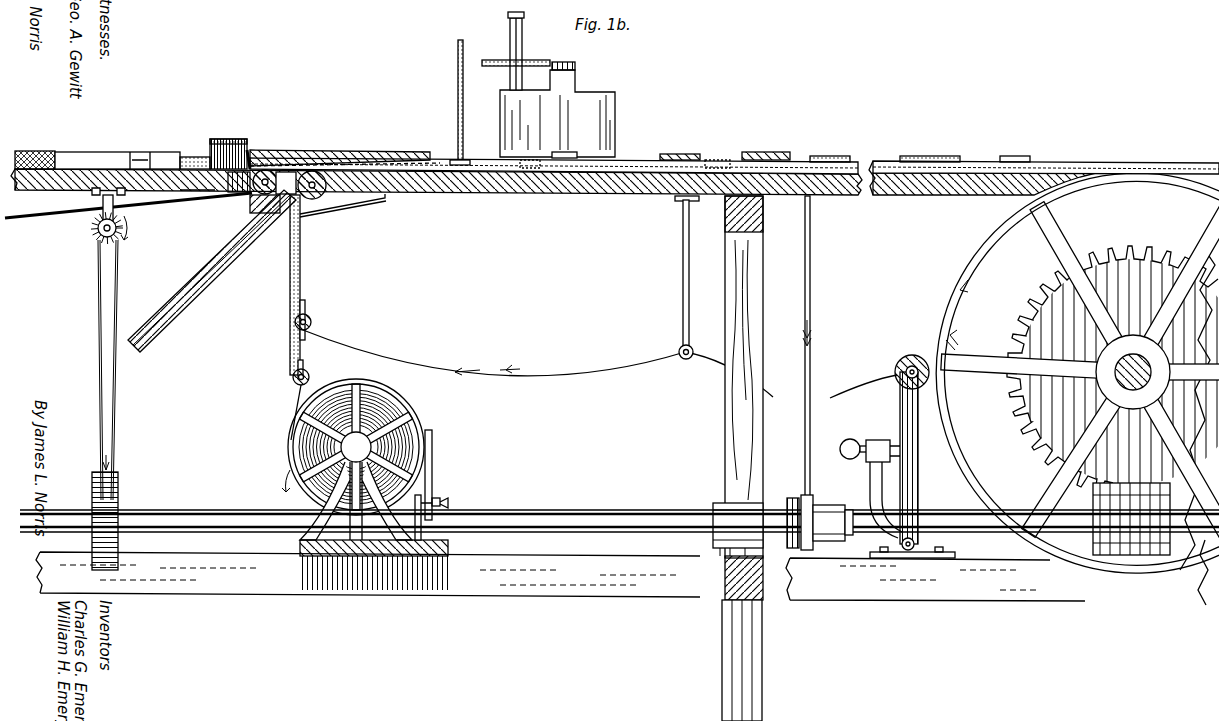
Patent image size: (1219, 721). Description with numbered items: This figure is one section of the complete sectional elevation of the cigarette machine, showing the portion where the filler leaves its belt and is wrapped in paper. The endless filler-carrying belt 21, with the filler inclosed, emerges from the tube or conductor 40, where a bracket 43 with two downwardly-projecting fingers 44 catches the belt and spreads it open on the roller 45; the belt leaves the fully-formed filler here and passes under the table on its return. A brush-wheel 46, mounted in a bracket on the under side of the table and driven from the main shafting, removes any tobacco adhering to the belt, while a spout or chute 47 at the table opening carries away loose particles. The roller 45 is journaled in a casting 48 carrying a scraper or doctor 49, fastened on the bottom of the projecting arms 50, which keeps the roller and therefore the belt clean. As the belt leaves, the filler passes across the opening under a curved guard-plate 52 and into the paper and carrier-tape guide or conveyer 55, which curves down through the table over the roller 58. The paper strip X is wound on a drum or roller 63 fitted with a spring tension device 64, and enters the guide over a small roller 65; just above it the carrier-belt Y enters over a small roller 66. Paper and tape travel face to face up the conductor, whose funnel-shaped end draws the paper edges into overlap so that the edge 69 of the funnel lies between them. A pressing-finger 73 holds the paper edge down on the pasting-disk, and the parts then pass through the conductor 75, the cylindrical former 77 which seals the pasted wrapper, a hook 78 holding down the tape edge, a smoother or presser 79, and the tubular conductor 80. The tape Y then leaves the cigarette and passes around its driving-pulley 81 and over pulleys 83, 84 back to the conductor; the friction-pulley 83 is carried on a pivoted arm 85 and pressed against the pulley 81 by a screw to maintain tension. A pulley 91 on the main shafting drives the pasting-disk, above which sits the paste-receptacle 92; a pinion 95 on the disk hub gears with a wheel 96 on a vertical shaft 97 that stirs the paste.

The filler-carrying belt 21 is at (188, 157).
The tube or conductor 40 is at (117, 151).
The bracket 43 is at (246, 140).
The fingers 44 is at (249, 150).
The roller 45 is at (252, 196).
The brush-wheel 46 is at (96, 229).
The spout or chute 47 is at (222, 283).
The casting 48 is at (250, 214).
The scraper or doctor 49 is at (234, 190).
The projecting arms 50 is at (216, 189).
The curved guard-plate 52 is at (345, 152).
The paper and carrier-tape guide or conveyer 55 is at (302, 280).
The roller 58 is at (316, 197).
The drum or roller 63 is at (365, 467).
The spring tension device 64 is at (435, 485).
The small roller 65 is at (313, 378).
The small roller 66 is at (311, 322).
The edge of the funnel 69 is at (468, 102).
The pressing-finger 73 is at (568, 153).
The conductor 75 is at (613, 172).
The cylindrical former 77 is at (680, 148).
The hook 78 is at (716, 160).
The smoother or presser 79 is at (766, 149).
The tubular conductor 80 is at (965, 151).
The driving-pulley 81 is at (945, 412).
The friction-pulley 83 is at (903, 380).
The pulley 84 is at (686, 360).
The pivoted arm 85 is at (918, 482).
The pulley 91 is at (812, 503).
The paste-receptacle 92 is at (616, 103).
The pinion 95 is at (576, 65).
The wheel 96 is at (512, 62).
The vertical shaft 97 is at (524, 47).
The paper strip X is at (632, 166).
The carrier-belt Y is at (358, 360).